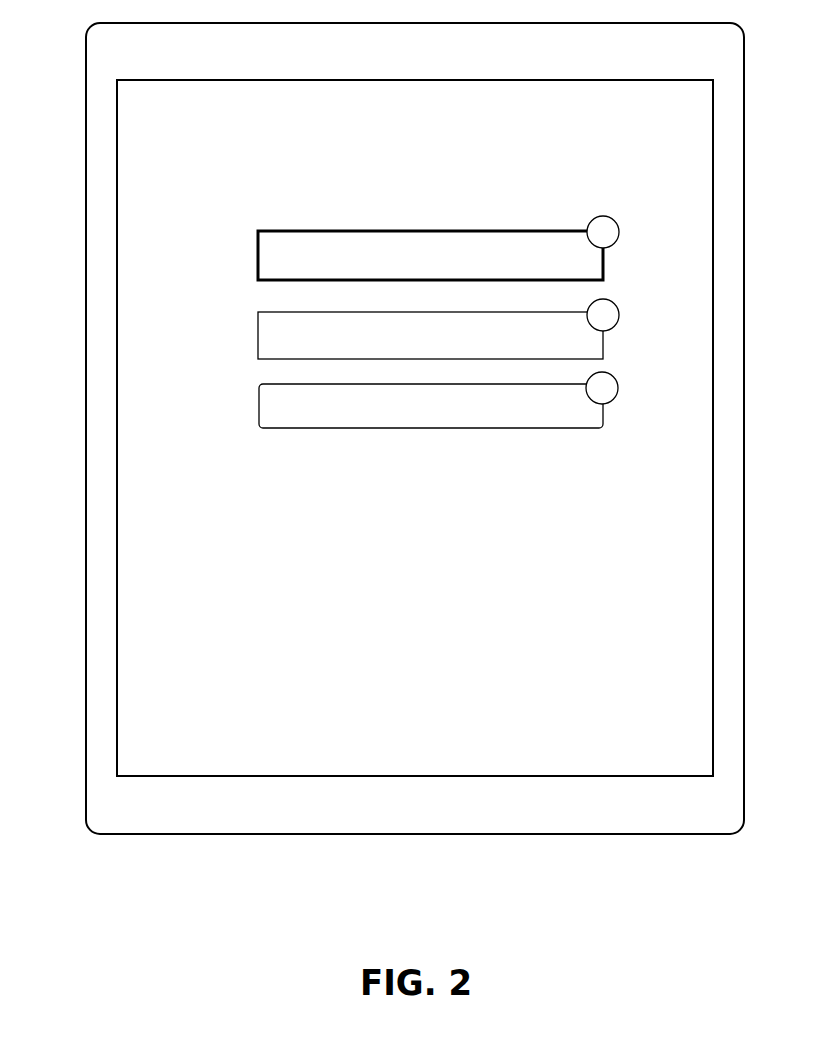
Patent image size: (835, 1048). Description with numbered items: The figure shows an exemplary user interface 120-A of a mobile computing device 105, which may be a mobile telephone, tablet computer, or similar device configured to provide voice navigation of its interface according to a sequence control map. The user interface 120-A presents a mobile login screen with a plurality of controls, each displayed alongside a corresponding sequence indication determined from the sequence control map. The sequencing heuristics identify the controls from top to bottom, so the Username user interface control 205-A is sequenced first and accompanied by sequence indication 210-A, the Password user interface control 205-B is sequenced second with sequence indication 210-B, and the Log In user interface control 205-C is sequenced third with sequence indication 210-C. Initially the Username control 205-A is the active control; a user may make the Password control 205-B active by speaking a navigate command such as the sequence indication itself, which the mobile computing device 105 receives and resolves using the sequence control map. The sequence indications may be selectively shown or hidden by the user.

The mobile computing device 105 is at (494, 834).
The user interface 120-A is at (713, 652).
The Username user interface control 205-A is at (258, 238).
The Password user interface control 205-B is at (258, 325).
The Log In user interface control 205-C is at (259, 402).
The sequence indication 210-A is at (619, 230).
The sequence indication 210-B is at (619, 315).
The sequence indication 210-C is at (618, 388).